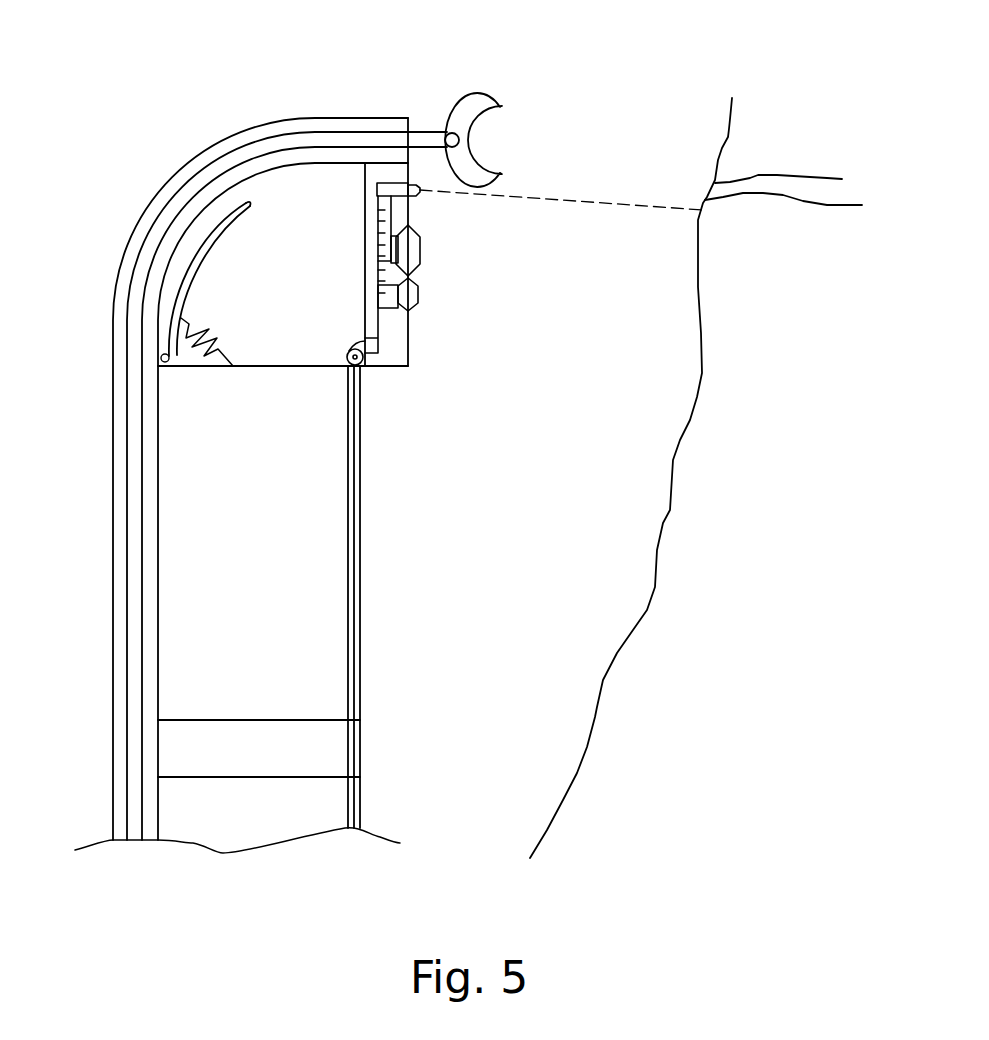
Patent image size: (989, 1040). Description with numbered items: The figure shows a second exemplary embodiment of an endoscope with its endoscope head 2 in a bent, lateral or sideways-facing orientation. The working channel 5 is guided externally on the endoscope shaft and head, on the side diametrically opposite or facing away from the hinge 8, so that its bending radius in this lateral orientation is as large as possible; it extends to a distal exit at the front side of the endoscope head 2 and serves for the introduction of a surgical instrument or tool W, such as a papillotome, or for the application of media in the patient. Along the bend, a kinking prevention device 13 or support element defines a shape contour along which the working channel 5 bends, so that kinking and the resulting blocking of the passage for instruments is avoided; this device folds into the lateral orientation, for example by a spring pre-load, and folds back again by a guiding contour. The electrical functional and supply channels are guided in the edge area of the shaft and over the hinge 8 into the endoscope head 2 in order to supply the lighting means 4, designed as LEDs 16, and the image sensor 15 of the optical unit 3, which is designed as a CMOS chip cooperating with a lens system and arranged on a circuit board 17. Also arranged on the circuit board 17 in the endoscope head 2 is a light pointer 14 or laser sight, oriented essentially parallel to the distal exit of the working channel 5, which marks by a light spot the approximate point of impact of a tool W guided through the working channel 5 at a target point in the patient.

The surgical instrument or tool W is at (425, 128).
The endoscope head 2 is at (398, 355).
The optical unit 3 is at (421, 247).
The lighting means 4 is at (418, 297).
The working channel 5 is at (113, 463).
The hinge 8 is at (360, 367).
The kinking prevention device 13 is at (173, 318).
The light pointer 14 is at (422, 195).
The image sensor 15 is at (378, 250).
The LEDs 16 is at (390, 288).
The circuit board 17 is at (377, 188).